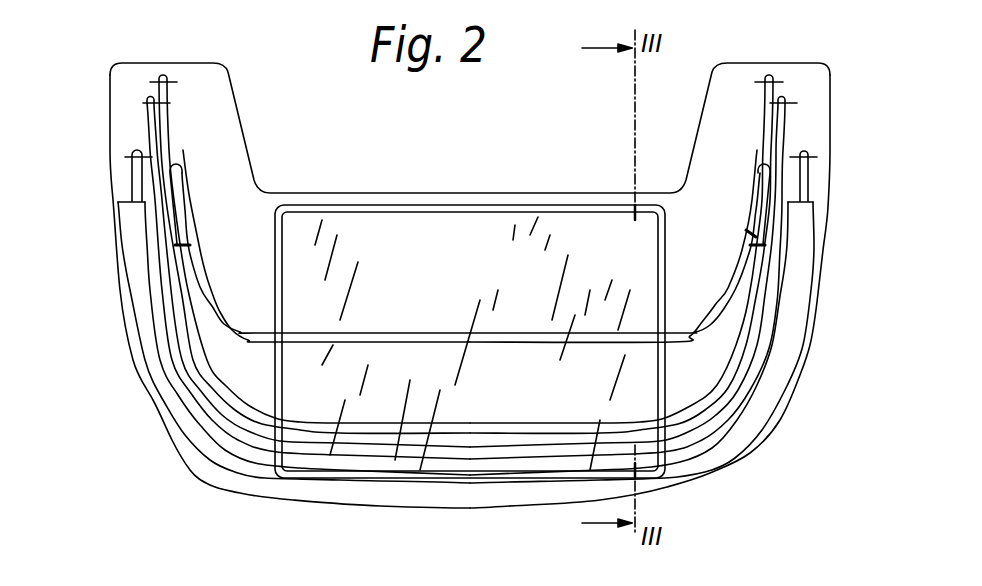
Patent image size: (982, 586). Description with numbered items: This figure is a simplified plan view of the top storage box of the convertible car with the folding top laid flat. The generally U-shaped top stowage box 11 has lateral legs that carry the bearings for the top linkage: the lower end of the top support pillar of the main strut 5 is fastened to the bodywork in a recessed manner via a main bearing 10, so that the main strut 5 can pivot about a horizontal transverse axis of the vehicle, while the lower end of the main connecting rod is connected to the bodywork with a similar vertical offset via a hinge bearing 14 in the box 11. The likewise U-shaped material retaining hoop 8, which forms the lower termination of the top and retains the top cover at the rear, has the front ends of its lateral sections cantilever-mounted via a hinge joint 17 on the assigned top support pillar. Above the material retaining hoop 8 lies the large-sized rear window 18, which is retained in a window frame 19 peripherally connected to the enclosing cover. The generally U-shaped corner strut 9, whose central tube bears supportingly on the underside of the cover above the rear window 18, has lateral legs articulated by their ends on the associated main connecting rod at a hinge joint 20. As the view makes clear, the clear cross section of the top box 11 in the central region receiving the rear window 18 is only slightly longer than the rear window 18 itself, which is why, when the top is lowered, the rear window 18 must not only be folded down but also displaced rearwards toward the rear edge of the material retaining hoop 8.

The main strut 5 is at (723, 393).
The material retaining hoop 8 is at (797, 317).
The corner strut 9 is at (750, 233).
The main bearing 10 is at (148, 100).
The top stowage box 11 is at (773, 427).
The hinge bearing 14 is at (152, 80).
The hinge joint 17 is at (130, 158).
The rear window 18 is at (396, 230).
The window frame 19 is at (548, 210).
The hinge joint 20 is at (183, 176).